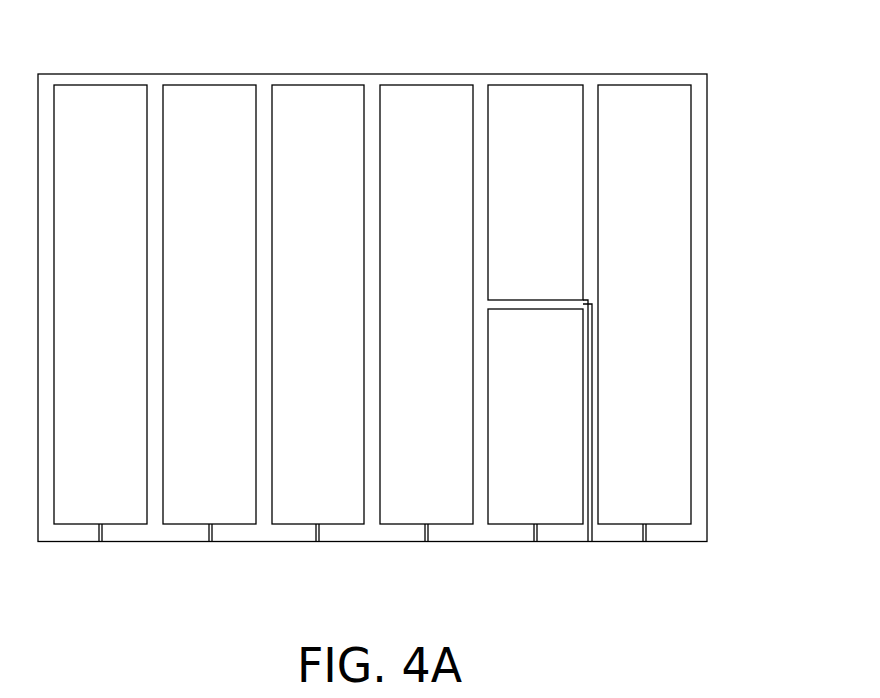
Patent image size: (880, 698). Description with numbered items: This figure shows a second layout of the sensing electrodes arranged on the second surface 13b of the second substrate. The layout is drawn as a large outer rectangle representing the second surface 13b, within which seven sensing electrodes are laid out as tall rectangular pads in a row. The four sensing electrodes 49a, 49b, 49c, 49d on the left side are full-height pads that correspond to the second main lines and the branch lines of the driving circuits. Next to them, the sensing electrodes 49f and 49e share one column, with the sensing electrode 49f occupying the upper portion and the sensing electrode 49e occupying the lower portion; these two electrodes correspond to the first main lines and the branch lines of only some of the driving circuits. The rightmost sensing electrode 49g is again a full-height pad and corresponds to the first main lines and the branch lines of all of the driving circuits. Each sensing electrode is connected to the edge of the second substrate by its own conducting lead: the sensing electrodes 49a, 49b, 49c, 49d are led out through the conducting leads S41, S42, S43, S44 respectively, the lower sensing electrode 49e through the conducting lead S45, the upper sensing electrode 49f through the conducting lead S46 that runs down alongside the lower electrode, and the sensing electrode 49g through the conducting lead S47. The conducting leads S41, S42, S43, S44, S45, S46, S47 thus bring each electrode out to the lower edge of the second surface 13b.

The second surface of the second substrate 13b is at (800, 33).
The sensing electrode 49a is at (124, 126).
The sensing electrode 49b is at (232, 126).
The sensing electrode 49c is at (341, 126).
The sensing electrode 49d is at (450, 126).
The sensing electrode 49e is at (558, 349).
The sensing electrode 49f is at (555, 126).
The sensing electrode 49g is at (668, 126).
The conducting lead S41 is at (101, 550).
The conducting lead S42 is at (210, 550).
The conducting lead S43 is at (318, 550).
The conducting lead S44 is at (426, 550).
The conducting lead S45 is at (535, 550).
The conducting lead S46 is at (587, 438).
The conducting lead S47 is at (644, 550).